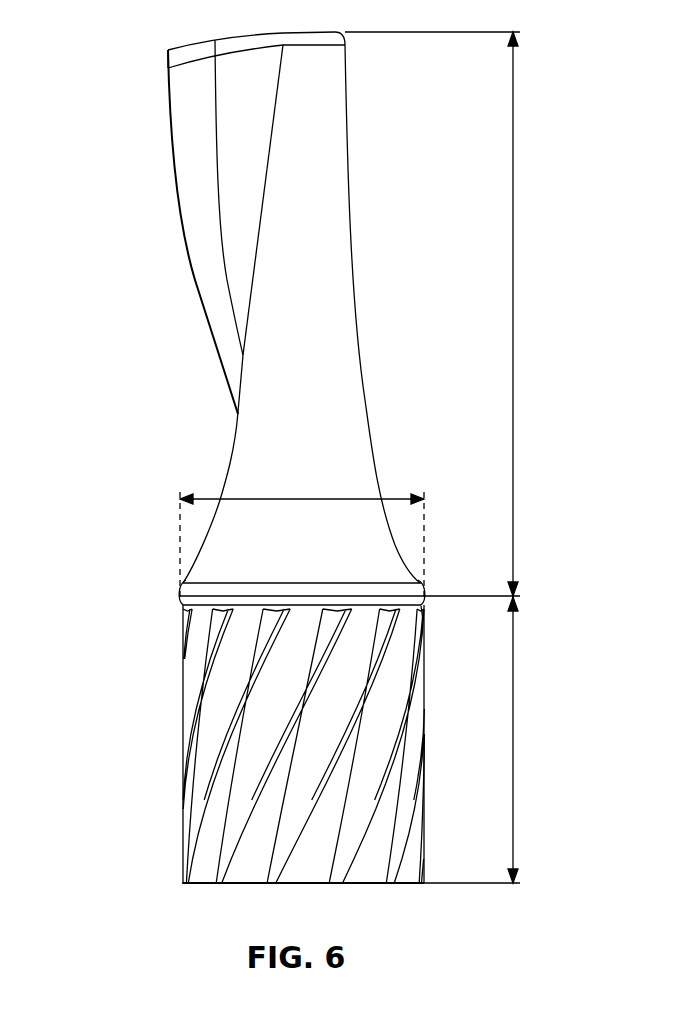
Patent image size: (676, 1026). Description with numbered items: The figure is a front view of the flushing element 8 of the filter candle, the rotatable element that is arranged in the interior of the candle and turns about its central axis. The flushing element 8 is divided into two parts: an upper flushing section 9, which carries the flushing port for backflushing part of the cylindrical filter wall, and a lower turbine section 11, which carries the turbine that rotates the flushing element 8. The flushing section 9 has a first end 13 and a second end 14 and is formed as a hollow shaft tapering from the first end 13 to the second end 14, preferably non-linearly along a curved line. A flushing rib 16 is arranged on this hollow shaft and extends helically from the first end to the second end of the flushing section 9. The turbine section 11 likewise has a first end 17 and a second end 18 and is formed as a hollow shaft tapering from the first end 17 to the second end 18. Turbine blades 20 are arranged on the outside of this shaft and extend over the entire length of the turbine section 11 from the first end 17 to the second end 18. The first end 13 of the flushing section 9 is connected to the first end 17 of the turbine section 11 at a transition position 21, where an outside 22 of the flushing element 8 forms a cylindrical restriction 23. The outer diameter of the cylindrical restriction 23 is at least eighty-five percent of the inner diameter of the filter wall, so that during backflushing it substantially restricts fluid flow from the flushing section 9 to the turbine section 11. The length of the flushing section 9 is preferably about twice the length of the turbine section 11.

The flushing element 8 is at (537, 367).
The flushing section 9 is at (168, 313).
The turbine section 11 is at (150, 748).
The first end of flushing section 13 is at (170, 572).
The second end of flushing section 14 is at (355, 40).
The flushing rib 16 is at (197, 117).
The first end of turbine section 17 is at (174, 604).
The second end of turbine section 18 is at (158, 870).
The turbine blades 20 is at (395, 860).
The transition position 21 is at (424, 592).
The outside of flushing element 22 is at (180, 593).
The cylindrical restriction 23 is at (421, 612).